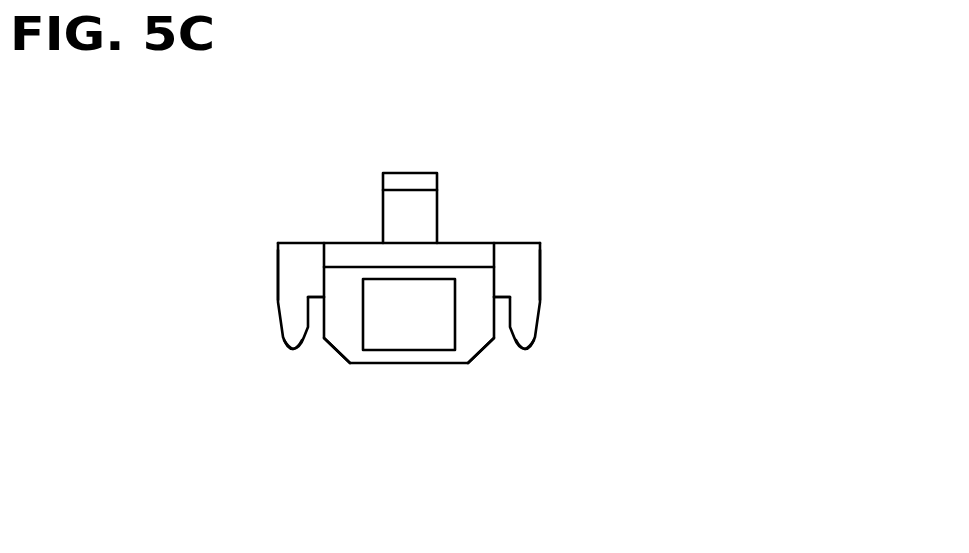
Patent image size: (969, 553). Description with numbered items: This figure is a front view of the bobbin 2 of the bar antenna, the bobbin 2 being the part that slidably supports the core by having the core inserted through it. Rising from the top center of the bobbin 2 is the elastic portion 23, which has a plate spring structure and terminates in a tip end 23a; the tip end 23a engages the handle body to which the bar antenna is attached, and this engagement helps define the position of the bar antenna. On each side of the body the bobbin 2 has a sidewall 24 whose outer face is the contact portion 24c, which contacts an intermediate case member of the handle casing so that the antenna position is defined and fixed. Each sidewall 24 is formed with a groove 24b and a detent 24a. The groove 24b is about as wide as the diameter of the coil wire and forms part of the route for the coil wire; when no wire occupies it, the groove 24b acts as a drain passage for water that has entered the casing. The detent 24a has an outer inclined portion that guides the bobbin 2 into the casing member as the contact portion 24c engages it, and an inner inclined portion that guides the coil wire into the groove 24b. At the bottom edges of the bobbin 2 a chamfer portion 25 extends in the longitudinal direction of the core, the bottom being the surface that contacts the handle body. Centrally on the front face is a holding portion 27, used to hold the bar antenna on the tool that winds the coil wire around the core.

The bobbin 2 is at (211, 177).
The elastic portion 23 is at (388, 220).
The tip end 23a is at (415, 172).
The sidewall 24 is at (278, 248).
The detent 24a is at (296, 330).
The groove 24b is at (317, 322).
The contact portion 24c is at (277, 274).
The chamfer portion 25 is at (340, 351).
The holding portion 27 is at (412, 329).